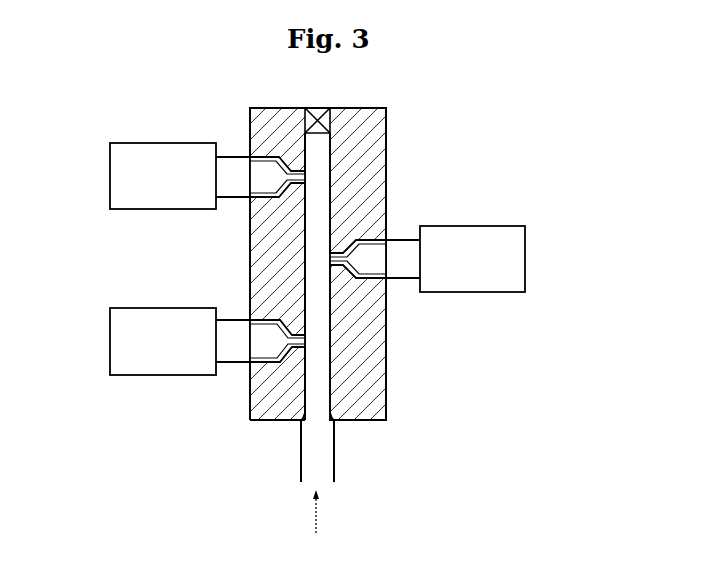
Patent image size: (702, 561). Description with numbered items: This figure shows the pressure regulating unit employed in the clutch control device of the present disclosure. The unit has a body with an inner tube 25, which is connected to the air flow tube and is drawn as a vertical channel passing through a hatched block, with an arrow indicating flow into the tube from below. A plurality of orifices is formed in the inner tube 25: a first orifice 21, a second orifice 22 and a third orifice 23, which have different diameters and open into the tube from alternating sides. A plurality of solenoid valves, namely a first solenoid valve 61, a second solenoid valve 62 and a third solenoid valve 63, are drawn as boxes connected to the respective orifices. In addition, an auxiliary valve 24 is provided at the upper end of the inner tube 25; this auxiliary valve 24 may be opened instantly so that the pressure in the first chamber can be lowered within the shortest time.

The first orifice 21 is at (305, 178).
The second orifice 22 is at (330, 258).
The third orifice 23 is at (305, 343).
The auxiliary valve 24 is at (317, 113).
The inner tube 25 is at (327, 446).
The first solenoid valve 61 is at (150, 152).
The second solenoid valve 62 is at (484, 232).
The third solenoid valve 63 is at (153, 316).